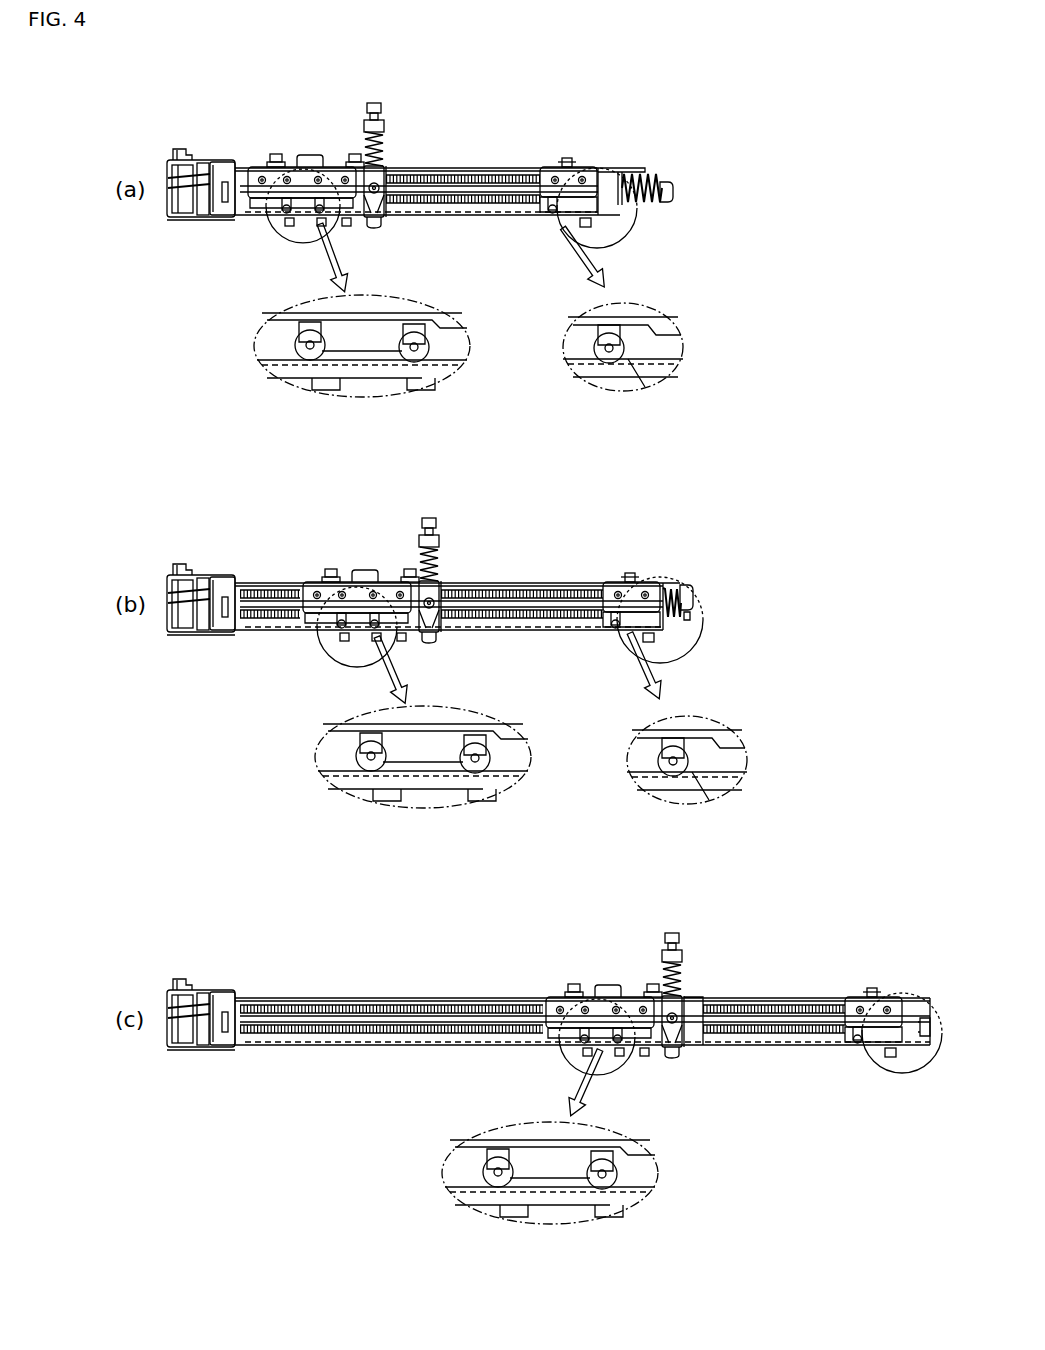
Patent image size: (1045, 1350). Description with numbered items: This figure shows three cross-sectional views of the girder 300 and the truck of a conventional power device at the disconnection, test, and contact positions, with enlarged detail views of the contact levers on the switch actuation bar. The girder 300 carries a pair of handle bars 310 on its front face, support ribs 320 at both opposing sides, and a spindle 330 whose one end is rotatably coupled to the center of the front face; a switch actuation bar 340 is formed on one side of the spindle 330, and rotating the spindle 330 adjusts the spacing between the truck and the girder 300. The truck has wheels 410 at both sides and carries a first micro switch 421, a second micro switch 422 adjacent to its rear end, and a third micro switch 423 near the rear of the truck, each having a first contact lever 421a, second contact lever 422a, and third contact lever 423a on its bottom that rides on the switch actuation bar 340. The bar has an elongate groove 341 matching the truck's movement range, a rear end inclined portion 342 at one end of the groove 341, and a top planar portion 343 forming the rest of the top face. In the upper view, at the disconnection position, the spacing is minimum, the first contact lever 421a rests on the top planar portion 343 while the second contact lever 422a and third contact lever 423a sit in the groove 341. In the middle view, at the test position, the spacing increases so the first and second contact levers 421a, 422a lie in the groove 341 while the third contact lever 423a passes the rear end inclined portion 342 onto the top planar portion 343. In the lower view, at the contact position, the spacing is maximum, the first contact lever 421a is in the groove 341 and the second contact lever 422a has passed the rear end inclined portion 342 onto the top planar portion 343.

The girder 300 is at (168, 220).
The handle bar 310 is at (178, 156).
The support rib 320 is at (228, 181).
The spindle 330 is at (455, 176).
The switch actuation bar 340 is at (255, 216).
The groove 341 is at (442, 361).
The rear end inclined portion 342 is at (722, 779).
The top planar portion 343 is at (347, 365).
The wheel 410 is at (616, 228).
The first micro switch 421 is at (262, 190).
The first contact lever 421a is at (305, 360).
The second micro switch 422 is at (343, 186).
The second contact lever 422a is at (407, 362).
The third micro switch 423 is at (588, 186).
The third contact lever 423a is at (612, 363).